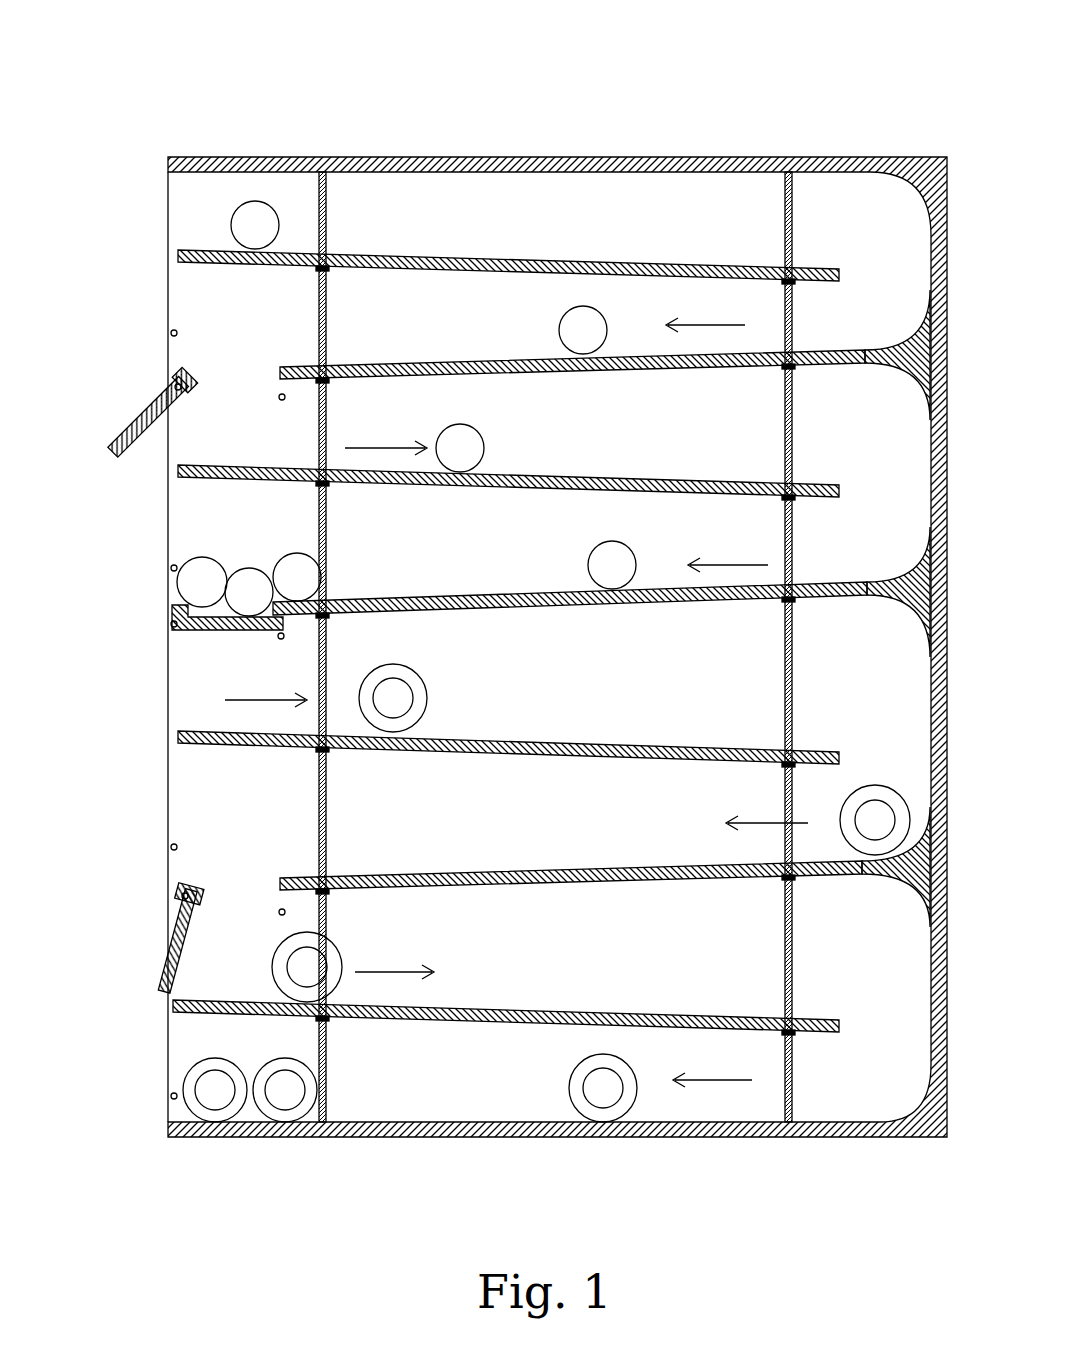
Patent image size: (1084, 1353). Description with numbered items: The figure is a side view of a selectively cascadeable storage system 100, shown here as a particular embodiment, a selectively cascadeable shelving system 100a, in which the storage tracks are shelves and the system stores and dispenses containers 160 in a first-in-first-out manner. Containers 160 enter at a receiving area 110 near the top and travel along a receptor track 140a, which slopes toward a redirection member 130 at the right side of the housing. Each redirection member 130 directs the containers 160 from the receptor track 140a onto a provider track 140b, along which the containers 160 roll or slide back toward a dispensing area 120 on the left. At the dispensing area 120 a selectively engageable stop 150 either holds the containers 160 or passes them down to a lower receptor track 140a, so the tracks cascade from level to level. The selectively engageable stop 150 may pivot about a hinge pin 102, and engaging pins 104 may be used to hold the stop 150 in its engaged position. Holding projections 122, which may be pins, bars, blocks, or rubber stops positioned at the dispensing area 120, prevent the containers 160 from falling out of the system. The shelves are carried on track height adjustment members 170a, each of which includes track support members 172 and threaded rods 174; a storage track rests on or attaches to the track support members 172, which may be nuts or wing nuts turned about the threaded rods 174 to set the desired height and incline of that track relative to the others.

The selectively cascadeable storage system 100 is at (118, 48).
The selectively cascadeable shelving system 100a is at (118, 48).
The hinge pin 102 is at (180, 897).
The engaging pin 104 is at (285, 397).
The receiving area 110 is at (180, 212).
The dispensing area 120 is at (180, 535).
The holding projection 122 is at (172, 333).
The redirection member 130 is at (912, 327).
The receptor track 140a is at (626, 249).
The provider track 140b is at (497, 361).
The selectively engageable stop 150 is at (194, 413).
The container 160 is at (307, 560).
The track height adjustment member 170a is at (551, 647).
The track support member 172 is at (592, 650).
The threaded rod 174 is at (326, 337).